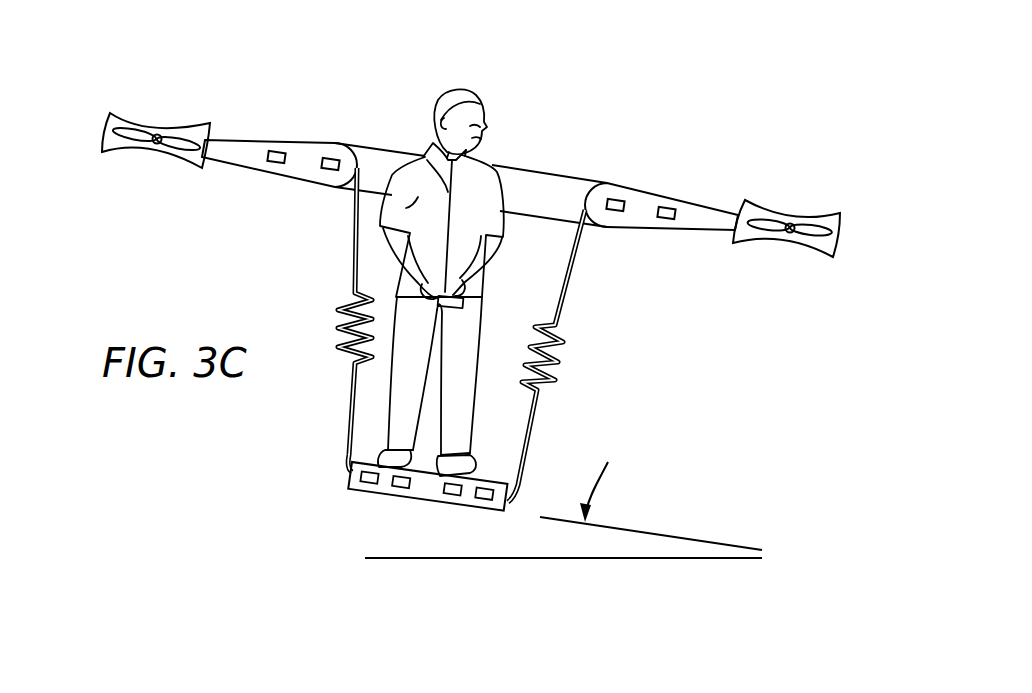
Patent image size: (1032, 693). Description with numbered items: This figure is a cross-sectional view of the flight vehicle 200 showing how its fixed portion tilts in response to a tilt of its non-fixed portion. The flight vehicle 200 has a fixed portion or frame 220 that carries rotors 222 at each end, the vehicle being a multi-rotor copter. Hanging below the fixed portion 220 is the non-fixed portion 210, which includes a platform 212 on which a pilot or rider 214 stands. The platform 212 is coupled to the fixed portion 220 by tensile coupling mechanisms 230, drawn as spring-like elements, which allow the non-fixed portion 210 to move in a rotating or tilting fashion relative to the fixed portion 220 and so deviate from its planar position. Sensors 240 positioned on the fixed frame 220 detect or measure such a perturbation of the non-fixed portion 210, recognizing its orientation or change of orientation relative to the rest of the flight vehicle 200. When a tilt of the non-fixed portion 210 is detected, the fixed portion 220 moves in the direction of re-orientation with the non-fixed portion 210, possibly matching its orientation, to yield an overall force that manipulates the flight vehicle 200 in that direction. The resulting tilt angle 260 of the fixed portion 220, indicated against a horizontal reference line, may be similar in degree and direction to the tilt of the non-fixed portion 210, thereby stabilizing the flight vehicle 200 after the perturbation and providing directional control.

The flight vehicle 200 is at (666, 117).
The non-fixed portion 210 is at (381, 510).
The platform 212 is at (489, 480).
The pilot or rider 214 is at (440, 93).
The fixed portion or frame 220 is at (307, 183).
The rotor 222 is at (100, 133).
The tensile coupling mechanism 230 is at (340, 348).
The sensor 240 is at (328, 158).
The tilt angle of the fixed portion 260 is at (583, 568).